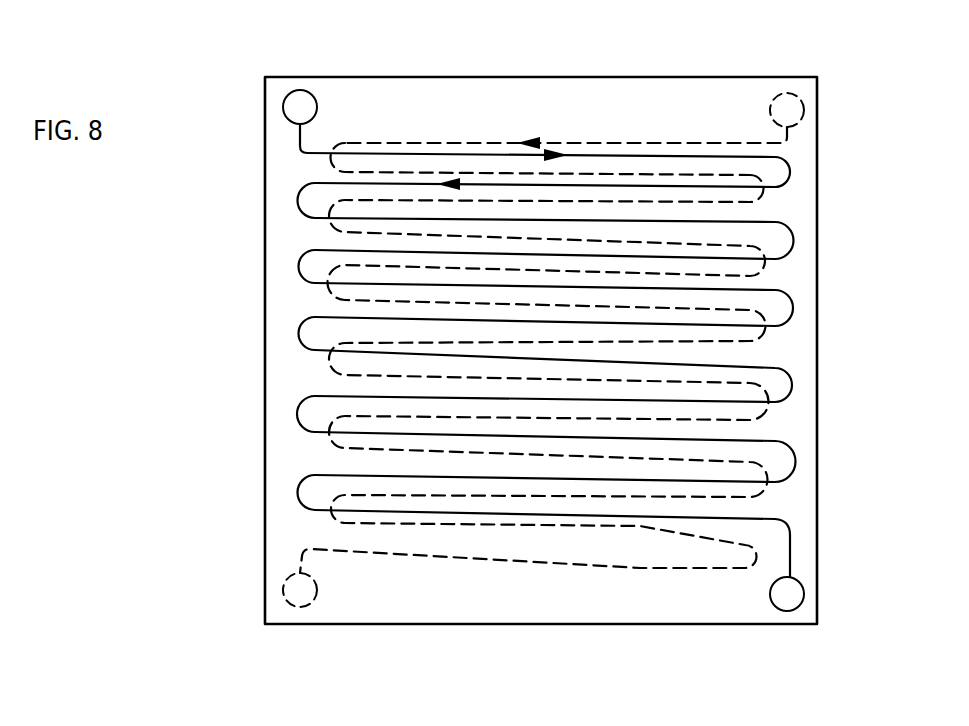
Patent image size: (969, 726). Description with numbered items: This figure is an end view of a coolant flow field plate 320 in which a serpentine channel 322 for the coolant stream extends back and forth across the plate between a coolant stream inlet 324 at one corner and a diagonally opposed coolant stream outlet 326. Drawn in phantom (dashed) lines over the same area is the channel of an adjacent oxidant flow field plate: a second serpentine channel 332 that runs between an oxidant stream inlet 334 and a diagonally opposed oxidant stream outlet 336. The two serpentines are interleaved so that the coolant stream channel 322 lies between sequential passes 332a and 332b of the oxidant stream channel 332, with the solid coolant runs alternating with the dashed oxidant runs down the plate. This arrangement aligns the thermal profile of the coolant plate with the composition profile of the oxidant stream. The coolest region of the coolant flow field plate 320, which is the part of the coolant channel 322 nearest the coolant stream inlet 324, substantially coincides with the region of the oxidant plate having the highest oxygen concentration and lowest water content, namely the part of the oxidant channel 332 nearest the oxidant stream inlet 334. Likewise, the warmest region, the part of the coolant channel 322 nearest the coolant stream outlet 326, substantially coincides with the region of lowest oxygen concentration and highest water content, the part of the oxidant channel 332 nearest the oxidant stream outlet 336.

The coolant flow field plate 320 is at (608, 634).
The serpentine channel 322 is at (652, 155).
The coolant stream inlet 324 is at (310, 97).
The coolant stream outlet 326 is at (777, 607).
The serpentine channel 332 is at (745, 350).
The sequential pass 332a is at (451, 143).
The sequential pass 332b is at (487, 175).
The oxidant stream inlet 334 is at (793, 94).
The oxidant stream outlet 336 is at (313, 603).